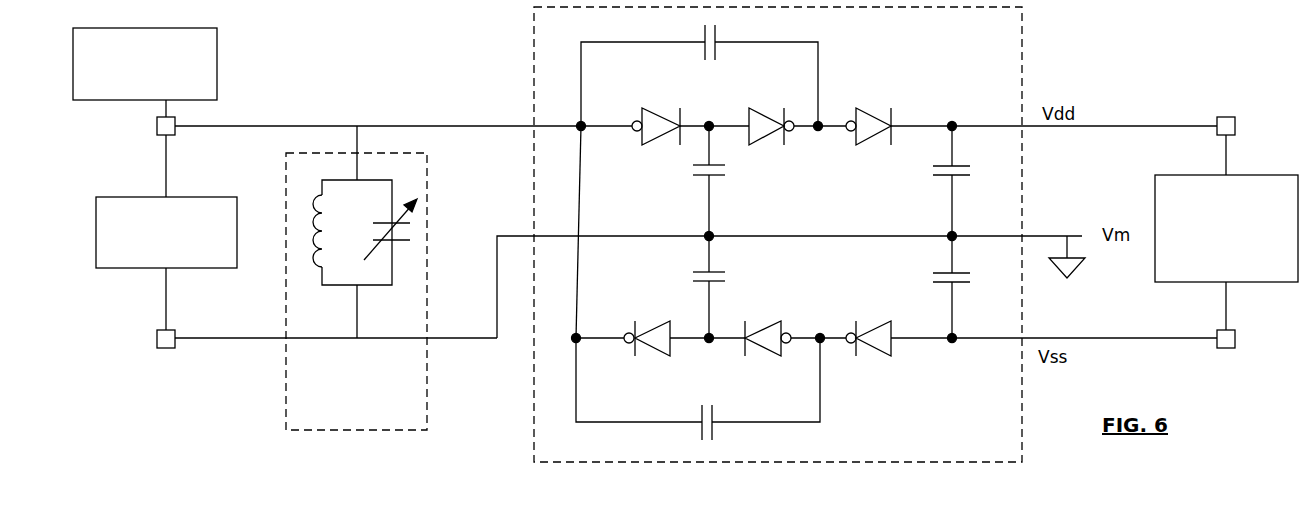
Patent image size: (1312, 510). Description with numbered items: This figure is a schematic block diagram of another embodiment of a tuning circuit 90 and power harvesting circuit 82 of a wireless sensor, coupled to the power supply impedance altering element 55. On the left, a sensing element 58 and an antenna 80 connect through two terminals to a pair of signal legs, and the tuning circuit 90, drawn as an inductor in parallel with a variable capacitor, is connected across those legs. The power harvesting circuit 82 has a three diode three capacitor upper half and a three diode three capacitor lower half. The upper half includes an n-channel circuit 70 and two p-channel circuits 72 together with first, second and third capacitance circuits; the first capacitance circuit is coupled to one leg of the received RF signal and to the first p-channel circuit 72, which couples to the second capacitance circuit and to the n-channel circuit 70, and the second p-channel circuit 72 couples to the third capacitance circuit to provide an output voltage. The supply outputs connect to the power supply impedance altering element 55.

The sensing element 58 is at (145, 81).
The antenna 80 is at (166, 241).
The tuning circuit 90 is at (356, 278).
The power harvesting circuit 82 is at (875, 234).
The power supply impedance altering element 55 is at (1226, 232).
The n-channel circuit 70 is at (757, 219).
The p-channel circuit 72 is at (761, 219).